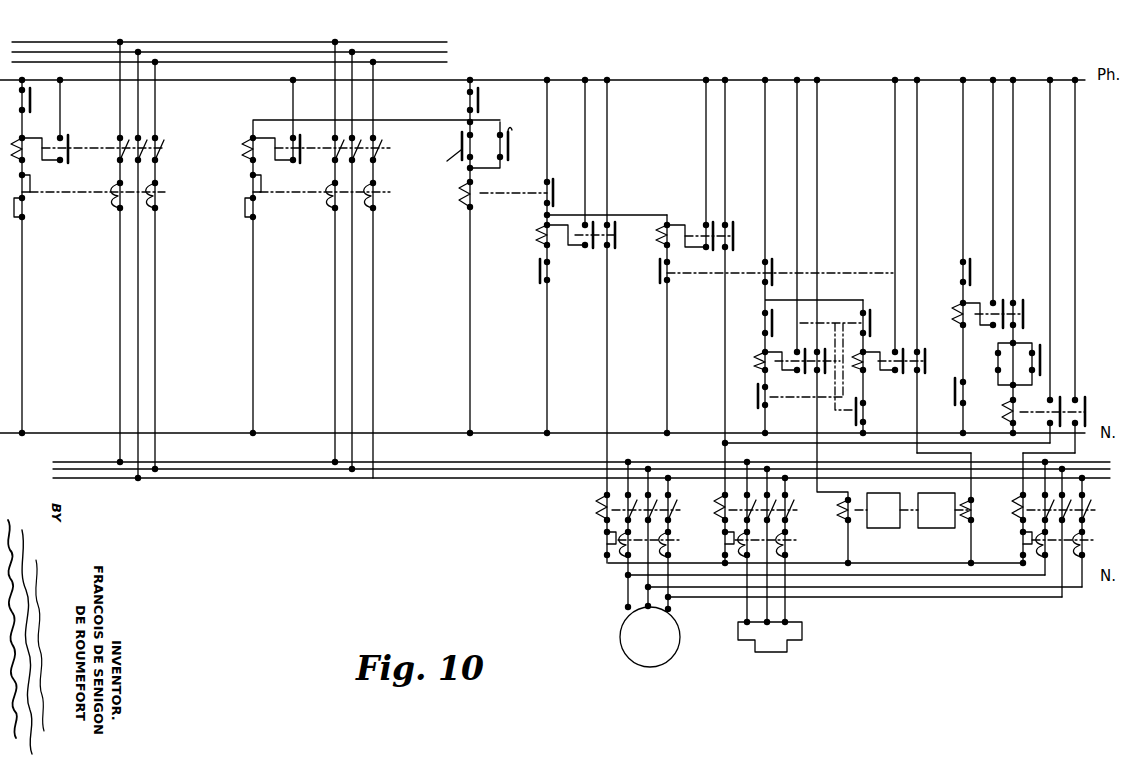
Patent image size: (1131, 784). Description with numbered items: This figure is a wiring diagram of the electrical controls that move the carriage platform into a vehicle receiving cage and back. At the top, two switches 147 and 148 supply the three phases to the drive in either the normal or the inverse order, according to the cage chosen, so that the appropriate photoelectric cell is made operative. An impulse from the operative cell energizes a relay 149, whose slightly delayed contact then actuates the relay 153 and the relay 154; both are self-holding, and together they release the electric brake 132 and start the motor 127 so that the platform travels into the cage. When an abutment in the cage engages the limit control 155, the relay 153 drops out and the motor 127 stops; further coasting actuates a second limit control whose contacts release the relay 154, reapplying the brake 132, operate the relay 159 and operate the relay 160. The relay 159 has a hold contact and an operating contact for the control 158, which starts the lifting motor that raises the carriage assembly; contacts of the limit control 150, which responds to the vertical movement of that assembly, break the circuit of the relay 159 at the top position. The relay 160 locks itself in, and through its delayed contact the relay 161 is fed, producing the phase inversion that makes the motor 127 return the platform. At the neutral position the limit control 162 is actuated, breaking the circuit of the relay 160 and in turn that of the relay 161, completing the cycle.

The switch 147 is at (163, 146).
The switch 148 is at (380, 146).
The relay 149 is at (478, 198).
The relay 153 is at (540, 235).
The relay 154 is at (662, 233).
The limit control 155 is at (536, 272).
The relay 159 is at (759, 358).
The limit control 150 is at (867, 367).
The relay 160 is at (958, 317).
The limit control 162 is at (956, 391).
The relay 161 is at (1002, 412).
The control 158 is at (878, 530).
The motor 127 is at (680, 633).
The electric brake 132 is at (805, 636).